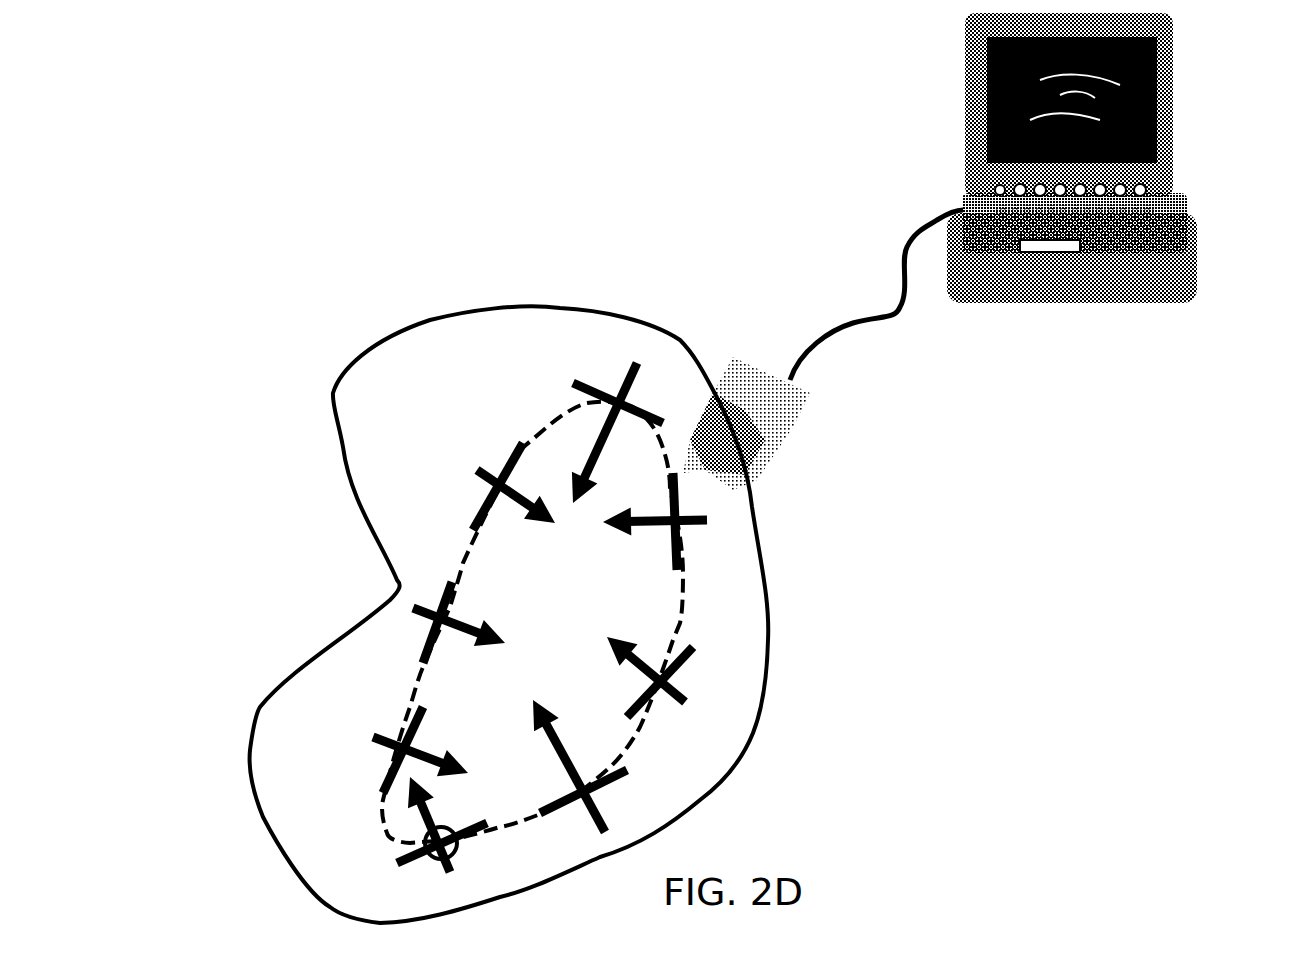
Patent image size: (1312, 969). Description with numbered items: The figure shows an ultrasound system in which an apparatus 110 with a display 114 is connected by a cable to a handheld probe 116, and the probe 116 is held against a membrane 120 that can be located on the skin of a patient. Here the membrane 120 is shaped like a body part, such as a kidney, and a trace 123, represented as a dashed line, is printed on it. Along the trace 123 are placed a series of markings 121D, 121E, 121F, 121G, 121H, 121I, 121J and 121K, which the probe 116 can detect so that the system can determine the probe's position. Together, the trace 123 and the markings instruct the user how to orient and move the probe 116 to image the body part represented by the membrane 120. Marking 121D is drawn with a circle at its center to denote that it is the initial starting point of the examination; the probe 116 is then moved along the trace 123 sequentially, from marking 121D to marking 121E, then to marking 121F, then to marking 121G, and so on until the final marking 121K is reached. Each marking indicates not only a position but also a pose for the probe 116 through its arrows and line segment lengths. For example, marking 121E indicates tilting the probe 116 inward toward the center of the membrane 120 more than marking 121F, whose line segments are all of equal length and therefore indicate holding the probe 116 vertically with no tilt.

The apparatus 110 is at (1173, 153).
The display 114 is at (983, 97).
The probe 116 is at (730, 397).
The membrane 120 is at (432, 321).
The trace 123 is at (545, 425).
The marking 121D is at (397, 863).
The marking 121E is at (610, 823).
The marking 121F is at (697, 650).
The marking 121G is at (707, 518).
The marking 121H is at (625, 375).
The marking 121I is at (473, 477).
The marking 121J is at (413, 603).
The marking 121K is at (377, 733).